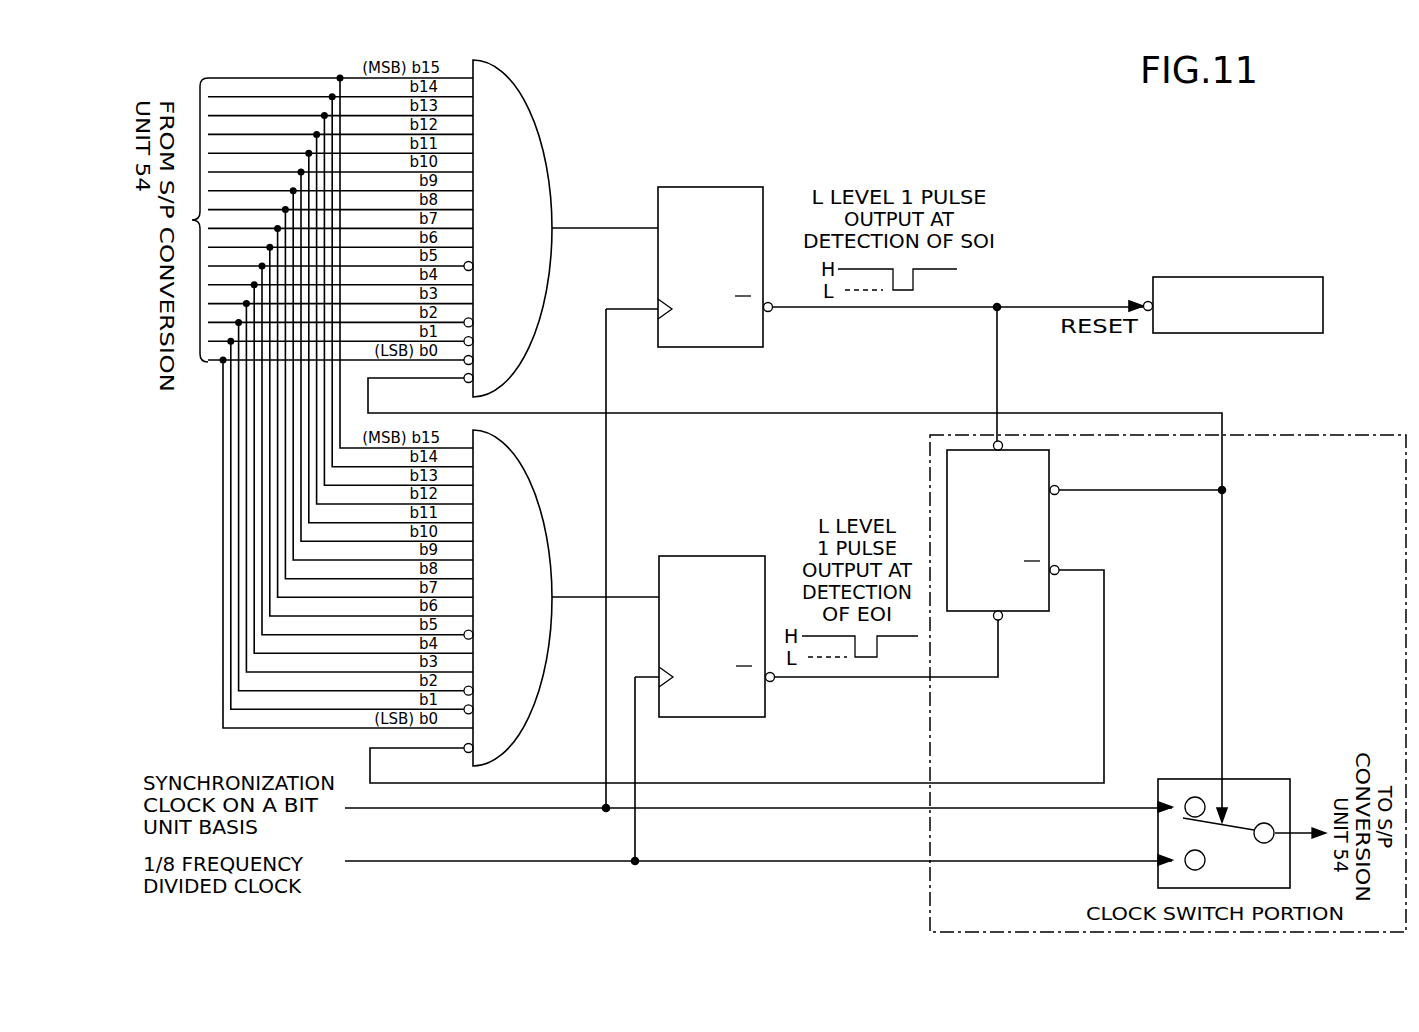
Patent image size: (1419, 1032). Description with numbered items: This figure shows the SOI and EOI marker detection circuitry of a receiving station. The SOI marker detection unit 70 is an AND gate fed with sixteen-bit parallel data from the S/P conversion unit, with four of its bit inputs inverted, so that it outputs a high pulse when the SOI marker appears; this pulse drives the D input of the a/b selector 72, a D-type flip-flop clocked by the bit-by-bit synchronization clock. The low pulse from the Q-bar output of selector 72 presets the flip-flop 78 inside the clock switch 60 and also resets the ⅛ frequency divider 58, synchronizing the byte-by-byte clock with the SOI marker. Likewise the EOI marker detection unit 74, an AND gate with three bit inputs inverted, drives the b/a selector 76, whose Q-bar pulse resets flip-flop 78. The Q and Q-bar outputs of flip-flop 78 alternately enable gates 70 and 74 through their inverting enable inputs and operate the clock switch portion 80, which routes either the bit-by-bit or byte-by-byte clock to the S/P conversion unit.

The ⅛ frequency divider 58 is at (1233, 277).
The clock switch 60 is at (1307, 433).
The SOI marker detection unit 70 is at (532, 112).
The a/b selector 72 is at (714, 187).
The EOI marker detection unit 74 is at (523, 462).
The b/a selector 76 is at (714, 556).
The flip-flop 78 is at (1033, 612).
The clock switch portion 80 is at (1158, 876).